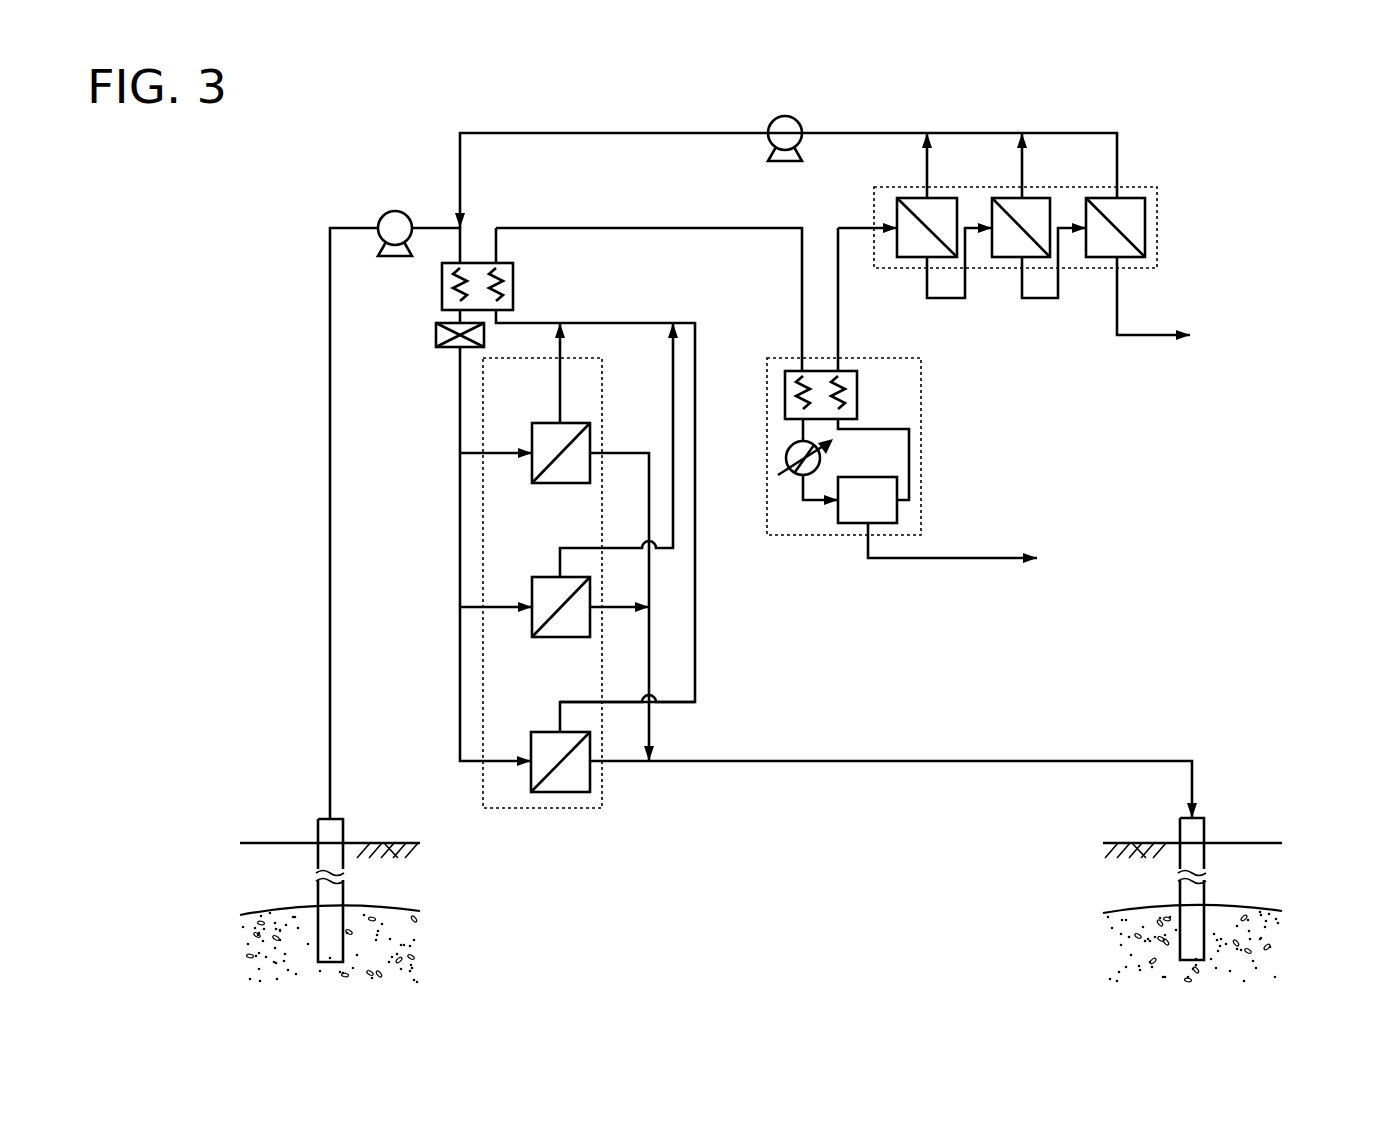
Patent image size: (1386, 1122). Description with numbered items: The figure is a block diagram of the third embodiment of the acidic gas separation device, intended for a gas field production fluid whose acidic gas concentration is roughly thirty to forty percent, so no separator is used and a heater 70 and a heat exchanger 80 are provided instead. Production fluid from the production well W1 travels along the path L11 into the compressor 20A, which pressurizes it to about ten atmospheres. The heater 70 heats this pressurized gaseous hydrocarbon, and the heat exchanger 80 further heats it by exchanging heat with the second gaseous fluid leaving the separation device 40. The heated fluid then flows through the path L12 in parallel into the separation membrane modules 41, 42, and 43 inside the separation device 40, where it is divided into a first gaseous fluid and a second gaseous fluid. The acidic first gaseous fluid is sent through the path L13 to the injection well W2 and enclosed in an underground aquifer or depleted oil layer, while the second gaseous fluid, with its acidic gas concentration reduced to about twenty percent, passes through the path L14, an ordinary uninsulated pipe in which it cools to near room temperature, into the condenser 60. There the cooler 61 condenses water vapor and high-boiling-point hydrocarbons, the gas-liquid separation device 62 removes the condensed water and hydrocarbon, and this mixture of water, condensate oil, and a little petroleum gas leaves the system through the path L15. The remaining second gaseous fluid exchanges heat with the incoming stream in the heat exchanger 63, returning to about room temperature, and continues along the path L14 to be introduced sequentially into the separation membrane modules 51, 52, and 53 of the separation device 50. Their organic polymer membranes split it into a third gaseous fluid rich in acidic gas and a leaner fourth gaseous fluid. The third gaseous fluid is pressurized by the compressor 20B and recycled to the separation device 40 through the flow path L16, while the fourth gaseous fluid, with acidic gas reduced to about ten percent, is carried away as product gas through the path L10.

The compressor 20A is at (430, 200).
The compressor 20B is at (800, 119).
The separation device 40 is at (580, 358).
The separation membrane module 41 is at (537, 423).
The separation membrane module 42 is at (537, 577).
The separation membrane module 43 is at (537, 732).
The separation device 50 is at (1157, 213).
The separation membrane module 51 is at (948, 198).
The separation membrane module 52 is at (1042, 198).
The separation membrane module 53 is at (1137, 198).
The condenser 60 is at (883, 358).
The cooler 61 is at (786, 456).
The gas-liquid separation device 62 is at (867, 477).
The heat exchanger 63 is at (785, 390).
The heater 70 is at (436, 335).
The heat exchanger 80 is at (513, 290).
The path L10 is at (1116, 318).
The path L11 is at (330, 555).
The path L12 is at (460, 545).
The path L13 is at (1035, 748).
The path L14 is at (668, 216).
The path L15 is at (967, 558).
The flow path L16 is at (678, 133).
The production well W1 is at (272, 887).
The injection well W2 is at (1282, 888).